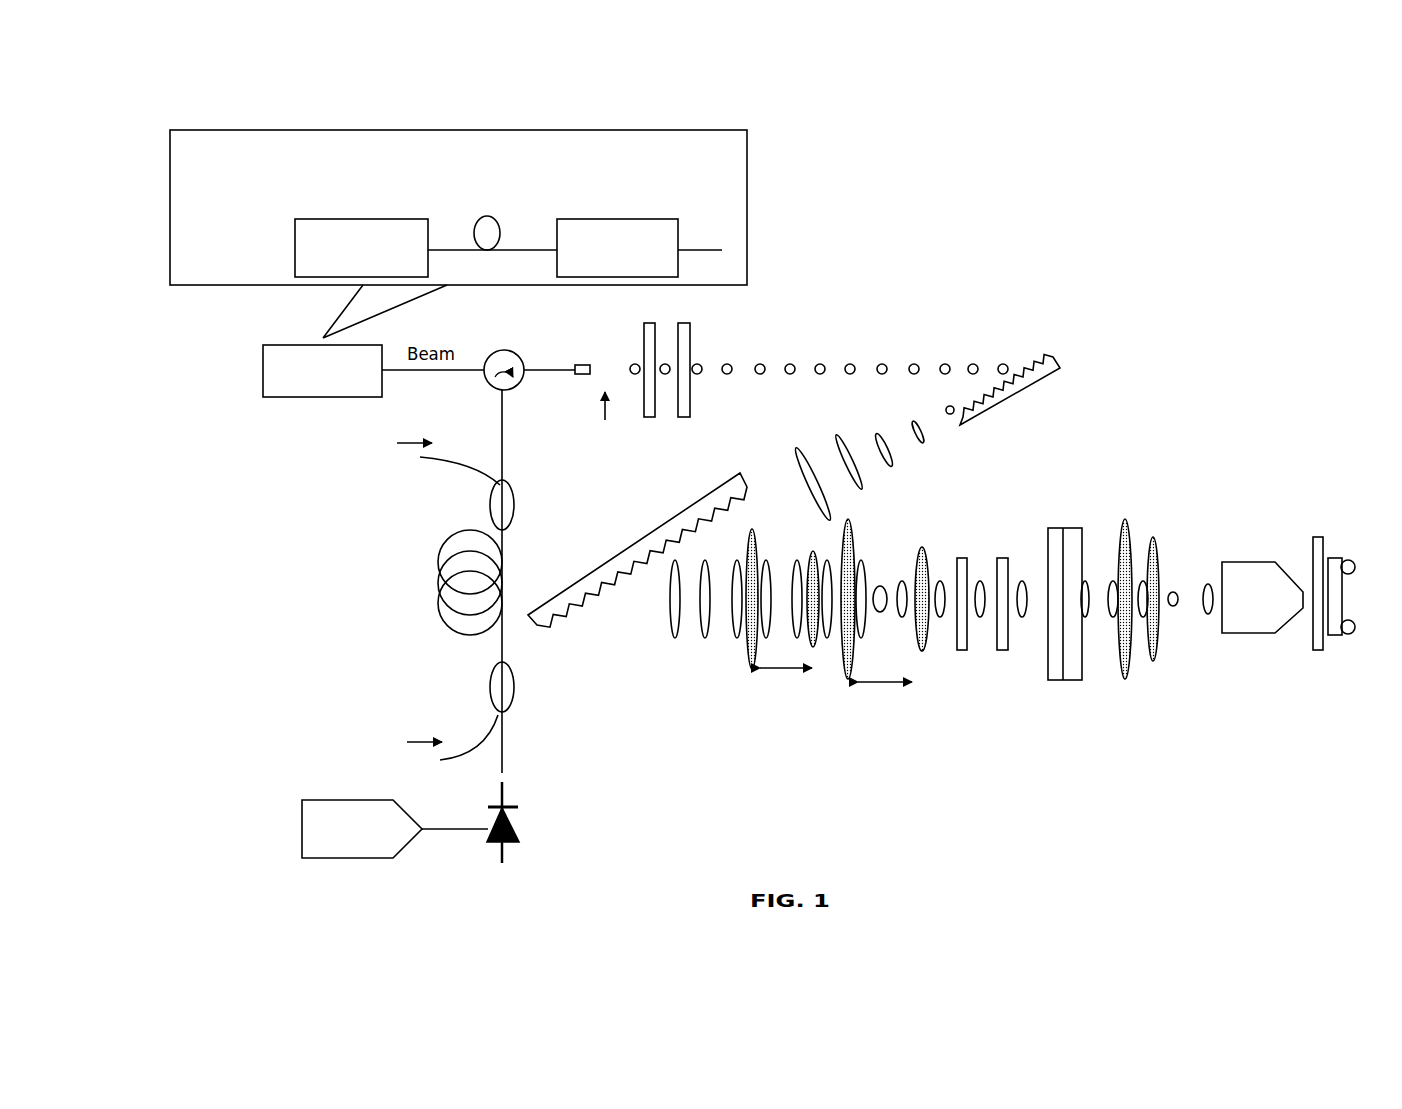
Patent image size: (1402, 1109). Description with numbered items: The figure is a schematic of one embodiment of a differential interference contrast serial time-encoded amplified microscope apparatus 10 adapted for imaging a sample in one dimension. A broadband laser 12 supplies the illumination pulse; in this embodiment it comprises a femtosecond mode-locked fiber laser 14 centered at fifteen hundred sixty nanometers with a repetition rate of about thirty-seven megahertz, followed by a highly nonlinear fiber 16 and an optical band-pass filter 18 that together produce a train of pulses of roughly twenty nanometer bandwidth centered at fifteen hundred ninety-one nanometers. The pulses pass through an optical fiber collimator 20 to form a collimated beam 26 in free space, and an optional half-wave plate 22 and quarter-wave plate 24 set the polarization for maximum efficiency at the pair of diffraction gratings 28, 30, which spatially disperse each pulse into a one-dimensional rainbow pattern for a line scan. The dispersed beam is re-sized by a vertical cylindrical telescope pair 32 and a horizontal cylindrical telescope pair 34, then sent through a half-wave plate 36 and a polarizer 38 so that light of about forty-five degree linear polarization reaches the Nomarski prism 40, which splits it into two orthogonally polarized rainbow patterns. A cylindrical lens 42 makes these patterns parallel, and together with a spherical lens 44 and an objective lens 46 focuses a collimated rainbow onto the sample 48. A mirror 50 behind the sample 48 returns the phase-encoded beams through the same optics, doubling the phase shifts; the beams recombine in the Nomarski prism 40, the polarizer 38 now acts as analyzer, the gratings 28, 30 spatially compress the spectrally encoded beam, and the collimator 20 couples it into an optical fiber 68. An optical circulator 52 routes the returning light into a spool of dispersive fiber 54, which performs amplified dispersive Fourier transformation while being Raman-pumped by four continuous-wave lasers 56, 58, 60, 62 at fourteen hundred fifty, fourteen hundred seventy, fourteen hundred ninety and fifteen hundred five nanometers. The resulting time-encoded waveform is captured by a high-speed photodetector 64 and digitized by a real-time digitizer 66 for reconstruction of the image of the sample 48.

The apparatus 10 is at (1278, 204).
The broadband laser 12 is at (261, 333).
The femtosecond mode-locked fiber laser 14 is at (295, 255).
The highly nonlinear fiber 16 is at (490, 185).
The optical band-pass filter 18 is at (678, 232).
The optical fiber collimator 20 is at (585, 366).
The half-wave plate 22 is at (678, 312).
The quarter-wave plate 24 is at (715, 432).
The collimated beam 26 is at (885, 365).
The diffraction grating 28 is at (1053, 357).
The diffraction grating 30 is at (573, 603).
The vertical cylindrical telescope lens pair 32 is at (762, 737).
The horizontal cylindrical telescope lens pair 34 is at (915, 750).
The half-wave plate 36 is at (947, 528).
The polarizer 38 is at (1002, 556).
The Nomarski prism 40 is at (1050, 480).
The cylindrical lens 42 is at (1133, 712).
The spherical lens 44 is at (1193, 475).
The objective lens 46 is at (1275, 680).
The sample 48 is at (1313, 556).
The mirror 50 is at (1347, 668).
The optical circulator 52 is at (547, 312).
The dispersive fiber 54 is at (458, 533).
The continuous-wave laser 56 is at (260, 470).
The continuous-wave laser 58 is at (357, 470).
The continuous-wave laser 60 is at (250, 755).
The continuous-wave laser 62 is at (350, 755).
The high-speed photodetector 64 is at (583, 840).
The real-time digitizer 66 is at (320, 858).
The optical fiber 68 is at (502, 408).